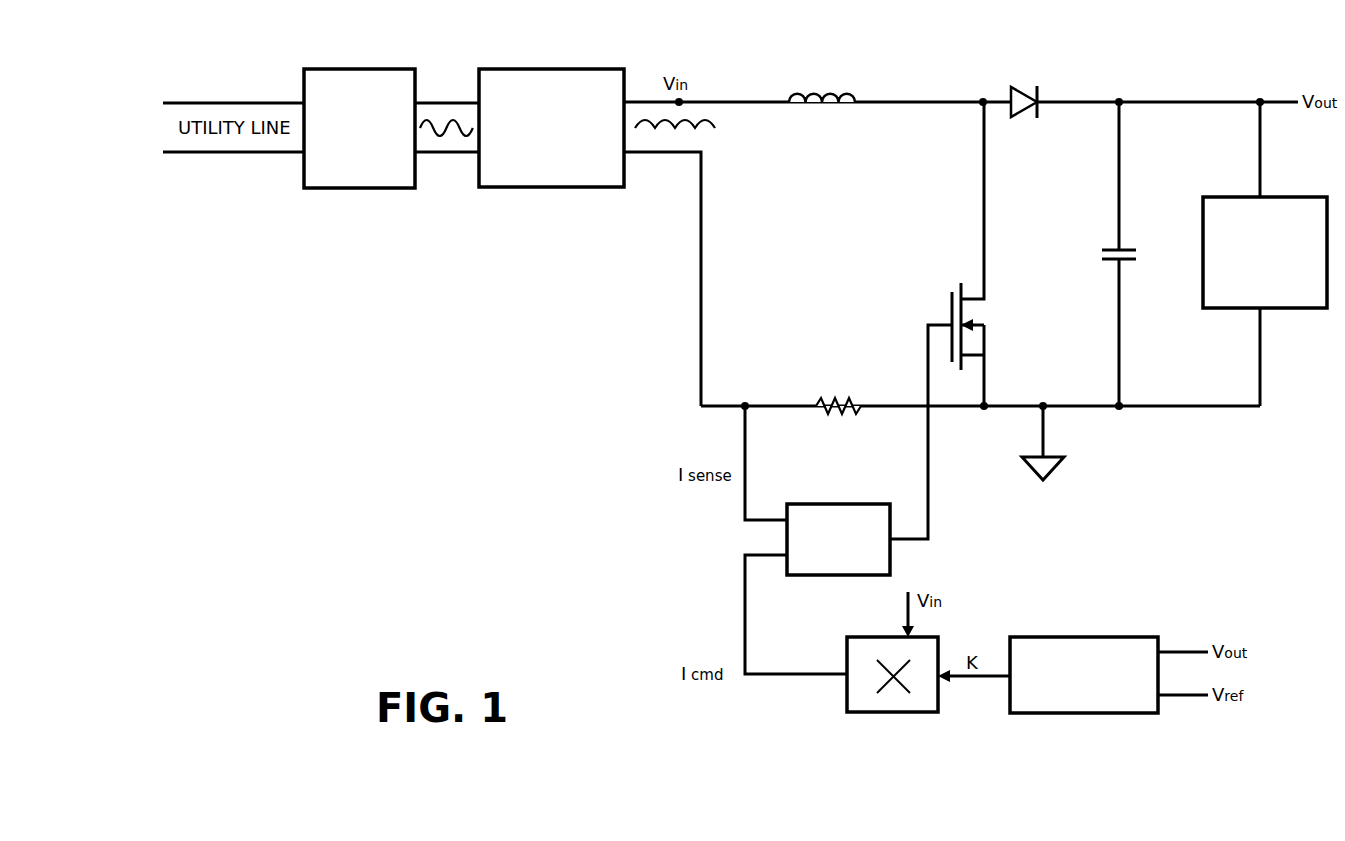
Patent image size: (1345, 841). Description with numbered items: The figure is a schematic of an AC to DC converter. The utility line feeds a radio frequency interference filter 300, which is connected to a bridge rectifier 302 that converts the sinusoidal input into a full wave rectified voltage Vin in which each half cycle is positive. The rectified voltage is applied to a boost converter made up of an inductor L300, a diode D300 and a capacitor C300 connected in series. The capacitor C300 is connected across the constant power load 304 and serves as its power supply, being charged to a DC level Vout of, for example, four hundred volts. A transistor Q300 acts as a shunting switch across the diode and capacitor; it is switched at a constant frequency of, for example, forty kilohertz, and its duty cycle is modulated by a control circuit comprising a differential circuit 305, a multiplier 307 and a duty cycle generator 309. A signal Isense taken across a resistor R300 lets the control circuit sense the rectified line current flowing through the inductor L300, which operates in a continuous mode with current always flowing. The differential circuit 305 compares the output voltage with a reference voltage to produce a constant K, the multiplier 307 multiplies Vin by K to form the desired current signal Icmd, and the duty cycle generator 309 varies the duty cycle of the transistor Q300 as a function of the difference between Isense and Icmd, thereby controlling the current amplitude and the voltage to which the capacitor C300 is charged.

The radio frequency interference filter 300 is at (375, 68).
The bridge rectifier 302 is at (541, 68).
The inductor L300 is at (830, 76).
The diode D300 is at (1022, 86).
The transistor Q300 is at (950, 297).
The capacitor C300 is at (1107, 259).
The resistor R300 is at (837, 412).
The constant power load 304 is at (1279, 300).
The differential circuit 305 is at (1046, 637).
The multiplier 307 is at (847, 651).
The duty cycle generator 309 is at (826, 577).